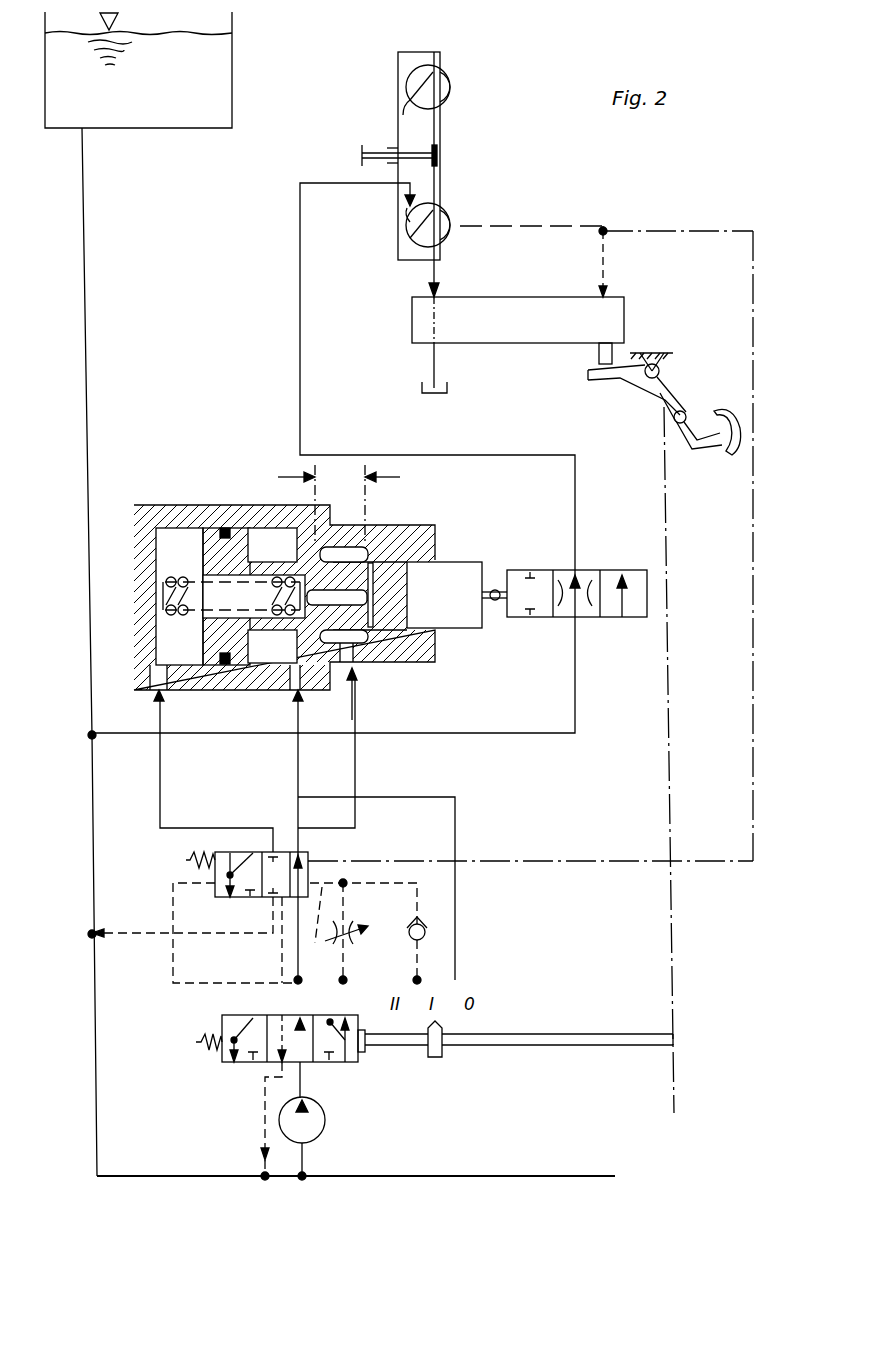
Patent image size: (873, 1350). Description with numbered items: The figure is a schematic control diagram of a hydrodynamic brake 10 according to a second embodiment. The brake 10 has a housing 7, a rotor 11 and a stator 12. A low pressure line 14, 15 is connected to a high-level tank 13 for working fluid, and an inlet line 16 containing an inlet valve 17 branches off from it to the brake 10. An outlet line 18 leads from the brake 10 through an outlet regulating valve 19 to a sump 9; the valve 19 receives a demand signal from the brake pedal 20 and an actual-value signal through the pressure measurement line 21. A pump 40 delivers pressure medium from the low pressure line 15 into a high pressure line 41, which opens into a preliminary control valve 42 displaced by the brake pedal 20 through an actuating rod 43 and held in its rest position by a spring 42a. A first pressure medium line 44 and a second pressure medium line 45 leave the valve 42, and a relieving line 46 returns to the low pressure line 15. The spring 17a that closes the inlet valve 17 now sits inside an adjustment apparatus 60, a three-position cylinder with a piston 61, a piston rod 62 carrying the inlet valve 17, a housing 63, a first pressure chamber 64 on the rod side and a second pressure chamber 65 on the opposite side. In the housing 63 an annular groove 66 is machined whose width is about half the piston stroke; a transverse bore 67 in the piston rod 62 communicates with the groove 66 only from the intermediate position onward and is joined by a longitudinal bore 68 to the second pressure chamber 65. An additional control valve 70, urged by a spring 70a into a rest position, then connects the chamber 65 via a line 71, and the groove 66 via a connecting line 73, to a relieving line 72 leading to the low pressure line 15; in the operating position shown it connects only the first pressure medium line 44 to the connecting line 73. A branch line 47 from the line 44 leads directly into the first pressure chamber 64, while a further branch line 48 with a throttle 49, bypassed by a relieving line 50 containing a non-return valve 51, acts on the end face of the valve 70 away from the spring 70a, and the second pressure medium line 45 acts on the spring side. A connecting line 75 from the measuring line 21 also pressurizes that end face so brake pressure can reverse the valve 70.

The housing 7 is at (398, 209).
The sump 9 is at (443, 395).
The hydrodynamic brake 10 is at (386, 117).
The rotor 11 is at (418, 238).
The stator 12 is at (452, 219).
The high-level tank 13 is at (221, 80).
The low pressure line 14 is at (86, 374).
The low pressure line 15 is at (98, 1138).
The inlet line 16 is at (300, 372).
The inlet valve 17 is at (607, 578).
The spring 17a is at (181, 622).
The outlet line 18 is at (437, 365).
The outlet regulating valve 19 is at (527, 332).
The brake pedal 20 is at (648, 385).
The pressure measurement line 21 is at (563, 226).
The pump 40 is at (323, 1128).
The high pressure line 41 is at (305, 1090).
The preliminary control valve 42 is at (358, 1062).
The spring 42a is at (196, 1042).
The actuating rod 43 is at (668, 430).
The first pressure medium line 44 is at (298, 958).
The second pressure medium line 45 is at (170, 945).
The relieving line 46 is at (262, 1090).
The branch line 47 is at (460, 900).
The branch line 48 is at (343, 962).
The throttle 49 is at (356, 942).
The relieving line 50 is at (417, 905).
The non-return valve 51 is at (421, 936).
The adjustment apparatus 60 is at (316, 588).
The piston 61 is at (207, 528).
The piston rod 62 is at (437, 570).
The housing 63 is at (160, 508).
The first pressure chamber 64 is at (282, 559).
The second pressure chamber 65 is at (189, 559).
The annular groove 66 is at (350, 520).
The transverse bore 67 is at (400, 606).
The longitudinal bore 68 is at (341, 695).
The control valve 70 is at (310, 857).
The spring 70a is at (176, 861).
The line 71 is at (160, 770).
The relieving line 72 is at (143, 930).
The connecting line 73 is at (355, 770).
The connecting line 75 is at (753, 768).